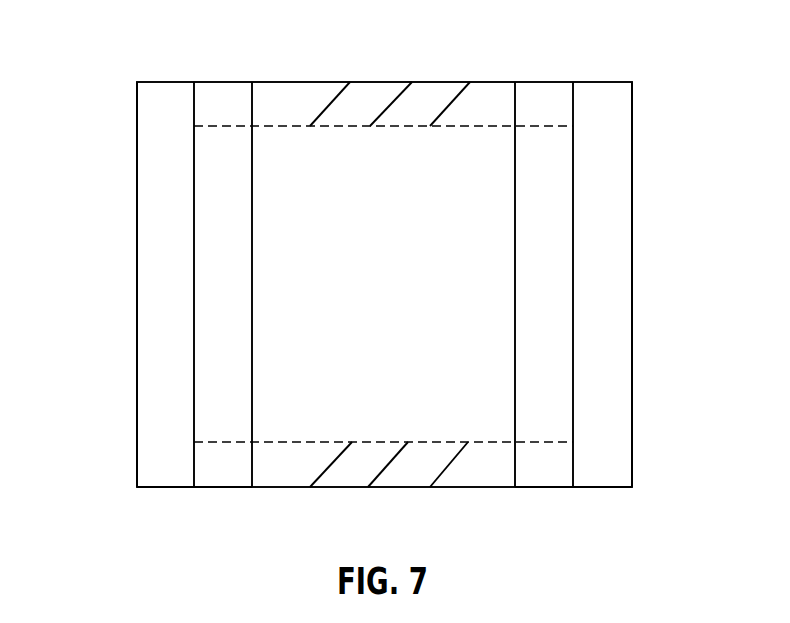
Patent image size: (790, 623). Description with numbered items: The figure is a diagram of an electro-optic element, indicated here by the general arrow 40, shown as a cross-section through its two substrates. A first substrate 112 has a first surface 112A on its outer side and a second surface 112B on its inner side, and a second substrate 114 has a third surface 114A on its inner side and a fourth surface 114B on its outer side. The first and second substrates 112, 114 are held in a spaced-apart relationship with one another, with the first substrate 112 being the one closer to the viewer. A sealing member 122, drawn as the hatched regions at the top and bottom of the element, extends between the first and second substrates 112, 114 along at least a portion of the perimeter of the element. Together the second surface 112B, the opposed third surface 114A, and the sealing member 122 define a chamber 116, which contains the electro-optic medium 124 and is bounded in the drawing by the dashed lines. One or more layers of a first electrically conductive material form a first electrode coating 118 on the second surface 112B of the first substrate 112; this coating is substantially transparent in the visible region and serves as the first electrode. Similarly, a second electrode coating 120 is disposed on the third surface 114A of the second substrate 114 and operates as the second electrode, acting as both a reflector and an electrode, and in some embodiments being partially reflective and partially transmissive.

The battery cell assembly 40 is at (568, 67).
The first substrate 112 is at (166, 488).
The first surface 112A is at (137, 225).
The second surface 112B is at (194, 158).
The second substrate 114 is at (600, 488).
The third surface 114A is at (573, 158).
The fourth surface 114B is at (632, 226).
The chamber 116 is at (402, 286).
The first electrode coating 118 is at (220, 417).
The second electrode coating 120 is at (547, 417).
The sealing member 122 is at (318, 98).
The electro-optic medium 124 is at (454, 408).